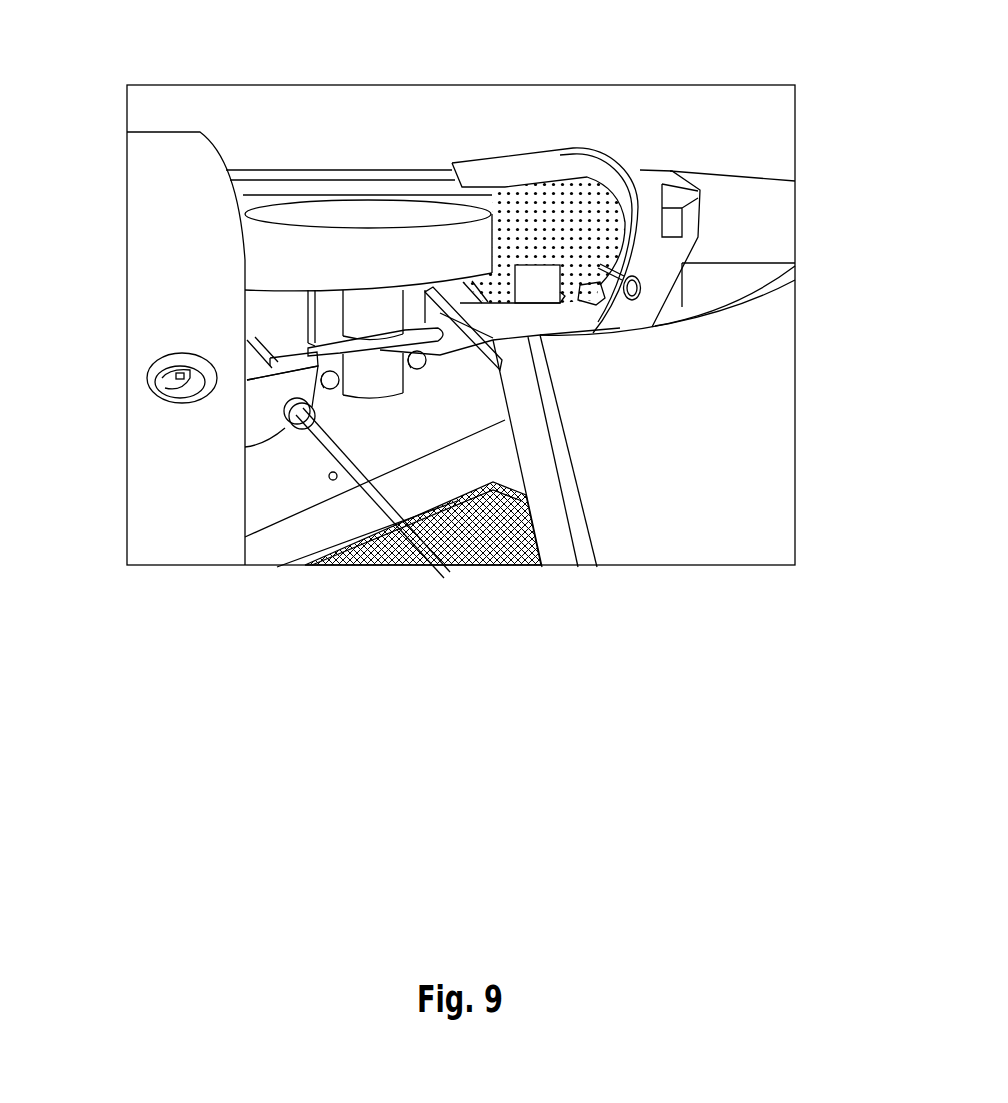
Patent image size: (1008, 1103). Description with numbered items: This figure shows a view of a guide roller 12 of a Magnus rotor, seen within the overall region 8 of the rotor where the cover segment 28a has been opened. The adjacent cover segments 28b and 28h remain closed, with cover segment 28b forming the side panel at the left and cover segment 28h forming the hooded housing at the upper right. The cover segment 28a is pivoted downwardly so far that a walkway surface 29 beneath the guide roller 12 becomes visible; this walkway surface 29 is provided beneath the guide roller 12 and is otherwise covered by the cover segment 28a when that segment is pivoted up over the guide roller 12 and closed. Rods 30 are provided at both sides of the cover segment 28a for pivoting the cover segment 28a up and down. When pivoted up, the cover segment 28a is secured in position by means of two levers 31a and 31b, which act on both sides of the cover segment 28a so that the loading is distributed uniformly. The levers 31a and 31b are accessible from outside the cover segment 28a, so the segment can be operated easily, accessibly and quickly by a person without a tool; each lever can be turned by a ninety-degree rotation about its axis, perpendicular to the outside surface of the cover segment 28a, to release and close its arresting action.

The fuel tank assembly 8 is at (430, 118).
The guide roller 12 is at (272, 257).
The cover segment 28a is at (658, 458).
The cover segment 28b is at (157, 445).
The cover segment 28h is at (655, 252).
The walkway surface 29 is at (490, 567).
The rods 30 is at (368, 513).
The lever 31a is at (152, 380).
The lever 31b is at (639, 293).